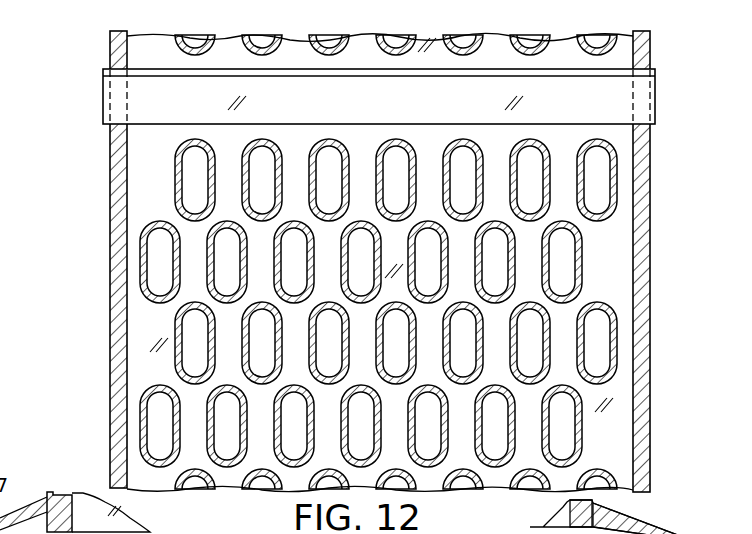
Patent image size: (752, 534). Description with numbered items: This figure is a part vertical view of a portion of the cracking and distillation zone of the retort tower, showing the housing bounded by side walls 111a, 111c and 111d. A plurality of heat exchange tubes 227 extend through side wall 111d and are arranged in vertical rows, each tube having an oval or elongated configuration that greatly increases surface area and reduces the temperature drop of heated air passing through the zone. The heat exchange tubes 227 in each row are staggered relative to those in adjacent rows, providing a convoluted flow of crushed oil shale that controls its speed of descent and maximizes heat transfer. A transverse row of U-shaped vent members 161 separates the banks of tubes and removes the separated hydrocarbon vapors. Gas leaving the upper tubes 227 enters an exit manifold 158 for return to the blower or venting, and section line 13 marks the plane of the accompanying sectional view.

The heat exchange tubes 227 is at (190, 38).
The U-shaped vent members 161 is at (118, 98).
The side wall 111a is at (650, 204).
The side wall 111c is at (116, 198).
The side wall 111d is at (297, 42).
The section line 13- 13 is at (461, 15).
The exit manifold 158 is at (660, 530).